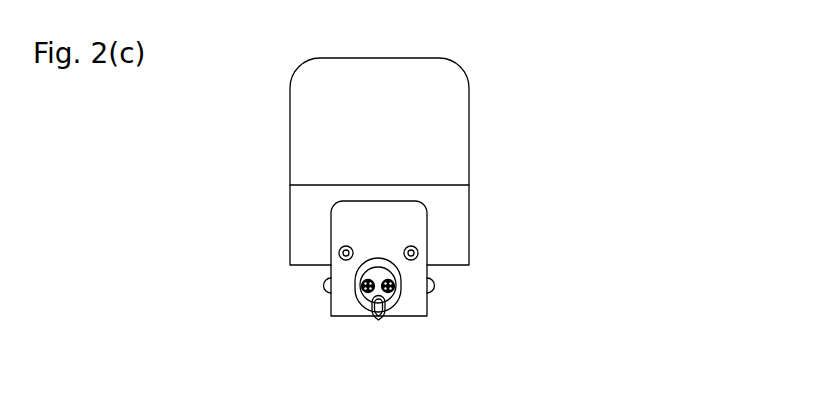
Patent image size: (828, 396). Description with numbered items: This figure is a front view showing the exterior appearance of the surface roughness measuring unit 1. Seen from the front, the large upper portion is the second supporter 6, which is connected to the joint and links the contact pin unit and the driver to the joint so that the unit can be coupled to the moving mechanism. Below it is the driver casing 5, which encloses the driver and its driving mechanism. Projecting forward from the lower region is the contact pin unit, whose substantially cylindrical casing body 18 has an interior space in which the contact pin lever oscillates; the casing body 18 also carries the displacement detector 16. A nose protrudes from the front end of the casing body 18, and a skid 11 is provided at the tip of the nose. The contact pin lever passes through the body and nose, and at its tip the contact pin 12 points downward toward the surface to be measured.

The surface roughness measuring unit 1 is at (258, 118).
The second supporter 6 is at (408, 58).
The driver casing 5 is at (420, 317).
The casing body 18 is at (433, 291).
The displacement detector 16 is at (357, 296).
The skid 11 is at (359, 314).
The contact pin 12 is at (379, 321).